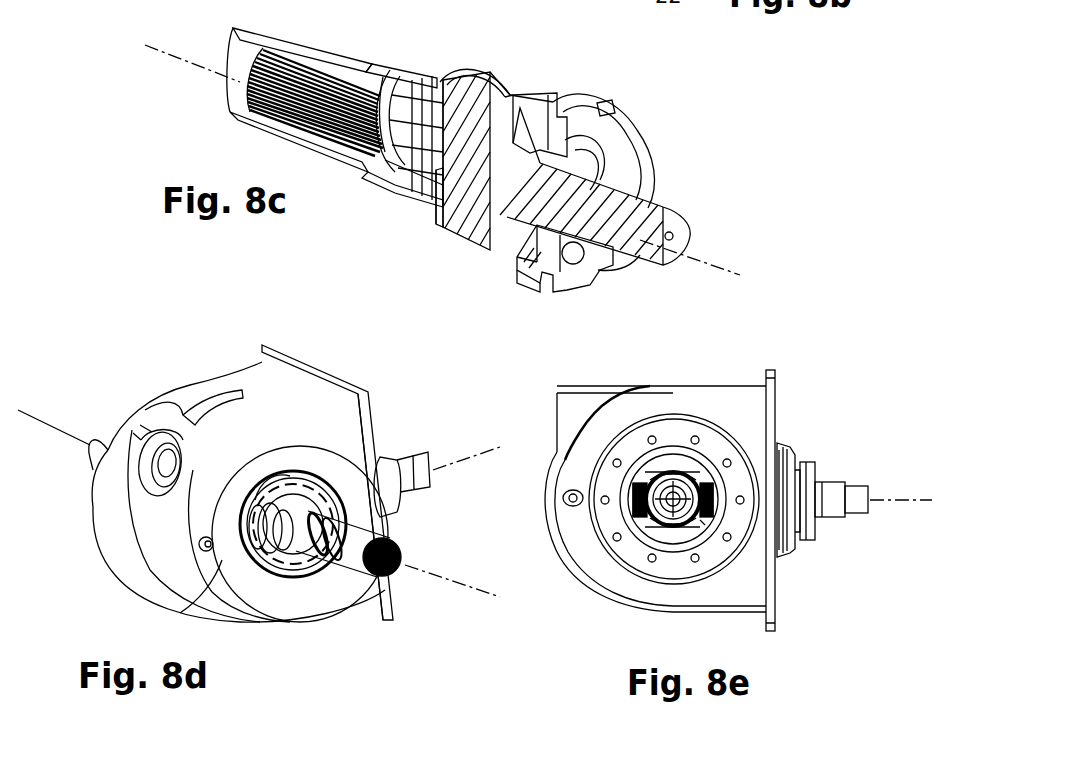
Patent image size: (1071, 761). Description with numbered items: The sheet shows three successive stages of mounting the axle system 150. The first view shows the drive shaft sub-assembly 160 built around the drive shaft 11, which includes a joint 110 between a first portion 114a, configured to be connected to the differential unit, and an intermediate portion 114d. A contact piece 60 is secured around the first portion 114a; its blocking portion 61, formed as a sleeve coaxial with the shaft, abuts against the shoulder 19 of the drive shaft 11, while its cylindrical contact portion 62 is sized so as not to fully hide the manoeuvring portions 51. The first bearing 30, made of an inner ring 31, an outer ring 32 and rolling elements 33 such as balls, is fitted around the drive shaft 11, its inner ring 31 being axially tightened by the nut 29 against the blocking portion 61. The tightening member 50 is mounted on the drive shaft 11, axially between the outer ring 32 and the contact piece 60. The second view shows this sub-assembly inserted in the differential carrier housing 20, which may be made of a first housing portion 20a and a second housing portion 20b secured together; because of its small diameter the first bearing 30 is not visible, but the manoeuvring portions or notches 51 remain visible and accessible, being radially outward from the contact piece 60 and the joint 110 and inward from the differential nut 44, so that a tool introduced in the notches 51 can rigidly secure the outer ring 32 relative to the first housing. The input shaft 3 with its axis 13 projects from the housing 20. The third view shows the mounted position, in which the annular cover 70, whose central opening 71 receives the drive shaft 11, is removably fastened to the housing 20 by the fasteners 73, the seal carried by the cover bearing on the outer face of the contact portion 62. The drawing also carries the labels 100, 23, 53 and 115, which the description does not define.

In FIG. 8c, the drive shaft 11 is at (232, 128).
In FIG. 8d, the drive shaft 11 is at (351, 594).
In FIG. 8e, the drive shaft 11 is at (692, 460).
In FIG. 8c, the shoulder 19 is at (508, 90).
In FIG. 8c, the contact portion 62 is at (540, 95).
In FIG. 8c, the manoeuvring portion 51 is at (607, 105).
In FIG. 8d, the manoeuvring portion 51 is at (281, 478).
In FIG. 8c, the outer ring 32 is at (620, 129).
In FIG. 8c, the nut 29 is at (640, 183).
In FIG. 8c, the drive shaft sub-assembly 160 is at (733, 119).
In FIG. 8c, the first portion 114a is at (637, 228).
In FIG. 8c, the axis of rotation 115 is at (738, 268).
In FIG. 8d, the axis of rotation 115 is at (437, 578).
In FIG. 8e, the axis of rotation 115 is at (700, 520).
In FIG. 8c, the inner ring 31 is at (620, 273).
In FIG. 8c, the first bearing 30 is at (592, 280).
In FIG. 8c, the rolling elements 33 is at (573, 265).
In FIG. 8c, the blocking portion 61 is at (518, 237).
In FIG. 8c, the contact piece 60 is at (537, 283).
In FIG. 8d, the contact piece 60 is at (182, 432).
In FIG. 8c, the tightening member 50 is at (592, 297).
In FIG. 8d, the tightening member 50 is at (215, 611).
In FIG. 8c, the gear unit 100 is at (462, 251).
In FIG. 8d, the axle system 150 is at (75, 407).
In FIG. 8e, the axle system 150 is at (843, 404).
In FIG. 8d, the differential carrier housing 20 is at (216, 469).
In FIG. 8e, the differential carrier housing 20 is at (710, 398).
In FIG. 8d, the first housing portion 20a is at (240, 378).
In FIG. 8d, the second housing portion 20b is at (305, 398).
In FIG. 8d, the differential nut 44 is at (318, 447).
In FIG. 8d, the input shaft 3 is at (400, 455).
In FIG. 8e, the input shaft 3 is at (853, 488).
In FIG. 8d, the axis 13 is at (470, 466).
In FIG. 8e, the axis 13 is at (898, 500).
In FIG. 8d, the joint 110 is at (280, 550).
In FIG. 8e, the joint 110 is at (688, 425).
In FIG. 8d, the intermediate portion 114d is at (353, 560).
In FIG. 8d, the axis 23 is at (481, 613).
In FIG. 8e, the axis 23 is at (808, 560).
In FIG. 8d, the axis 53 is at (481, 613).
In FIG. 8e, the axis 53 is at (808, 560).
In FIG. 8e, the annular cover 70 is at (651, 523).
In FIG. 8e, the central opening 71 is at (673, 560).
In FIG. 8e, the fasteners 73 is at (617, 540).